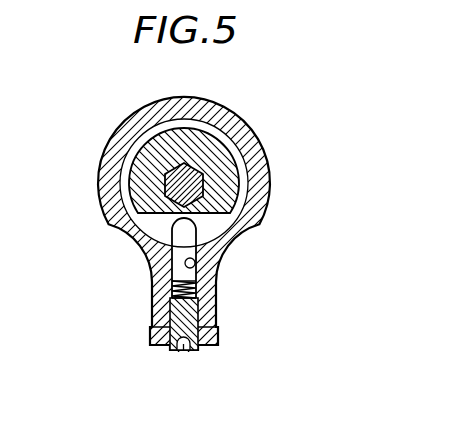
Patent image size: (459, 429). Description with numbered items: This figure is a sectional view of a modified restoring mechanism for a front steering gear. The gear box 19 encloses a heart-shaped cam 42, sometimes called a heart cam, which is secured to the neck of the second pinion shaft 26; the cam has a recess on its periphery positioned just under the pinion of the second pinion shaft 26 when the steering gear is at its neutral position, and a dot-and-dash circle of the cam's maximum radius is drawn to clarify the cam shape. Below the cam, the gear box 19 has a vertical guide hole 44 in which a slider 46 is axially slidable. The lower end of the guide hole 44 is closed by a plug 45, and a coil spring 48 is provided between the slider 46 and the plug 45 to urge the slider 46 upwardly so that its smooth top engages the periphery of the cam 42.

The gear box 19 is at (237, 127).
The second pinion shaft 26 is at (168, 172).
The cam 42 is at (233, 210).
The slider 46 is at (186, 230).
The guide hole 44 is at (195, 266).
The coil spring 48 is at (174, 297).
The plug 45 is at (193, 350).